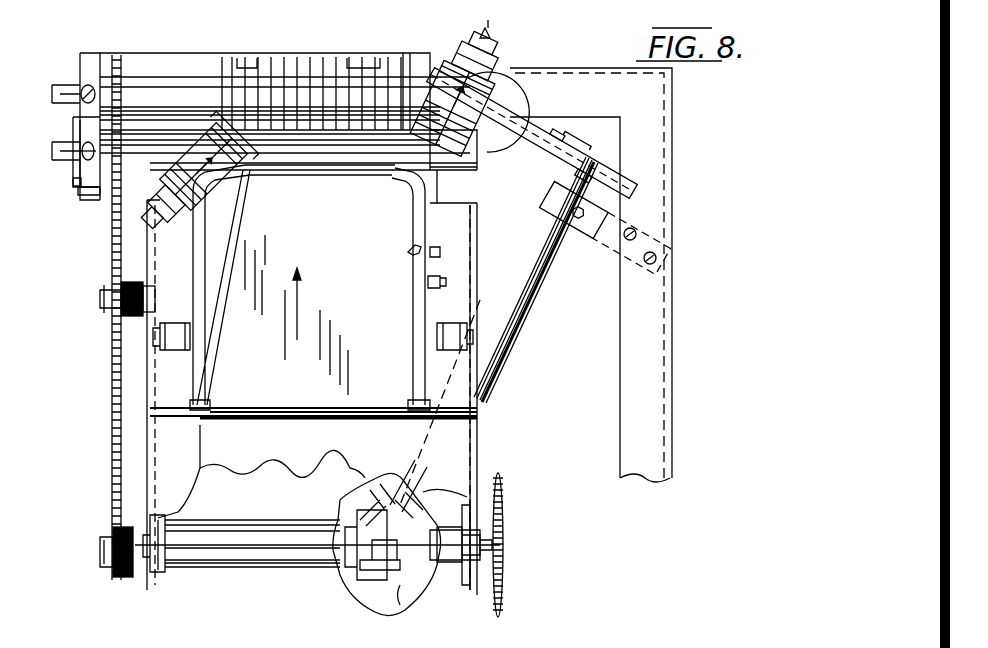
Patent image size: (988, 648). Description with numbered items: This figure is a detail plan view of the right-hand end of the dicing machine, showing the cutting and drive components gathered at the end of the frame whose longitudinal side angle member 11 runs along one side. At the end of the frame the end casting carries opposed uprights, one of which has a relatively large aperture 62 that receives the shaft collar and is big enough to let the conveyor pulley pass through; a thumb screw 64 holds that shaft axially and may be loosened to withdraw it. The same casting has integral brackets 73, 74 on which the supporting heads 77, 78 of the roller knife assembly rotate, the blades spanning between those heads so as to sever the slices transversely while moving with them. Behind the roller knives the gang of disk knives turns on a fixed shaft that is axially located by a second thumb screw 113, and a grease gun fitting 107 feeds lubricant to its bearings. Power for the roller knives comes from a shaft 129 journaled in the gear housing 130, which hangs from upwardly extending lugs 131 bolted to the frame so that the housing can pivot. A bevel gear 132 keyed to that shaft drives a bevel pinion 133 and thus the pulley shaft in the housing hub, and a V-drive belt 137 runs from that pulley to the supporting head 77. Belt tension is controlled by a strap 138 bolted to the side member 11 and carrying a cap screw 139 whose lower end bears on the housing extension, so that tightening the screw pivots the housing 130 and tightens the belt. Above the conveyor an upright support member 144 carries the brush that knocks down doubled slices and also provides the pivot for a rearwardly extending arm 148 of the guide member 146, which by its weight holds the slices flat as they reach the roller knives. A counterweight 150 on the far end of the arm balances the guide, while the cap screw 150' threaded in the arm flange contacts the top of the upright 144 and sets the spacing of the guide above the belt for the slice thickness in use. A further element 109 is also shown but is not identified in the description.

The side angle member 11 is at (653, 365).
The aperture 62 is at (77, 190).
The thumb screw 64 is at (80, 160).
The bracket 73 is at (517, 73).
The bracket 74 is at (143, 237).
The supporting head 77 is at (447, 63).
The supporting head 78 is at (160, 133).
The grease gun fitting 107 is at (433, 253).
The roller 109 is at (443, 280).
The thumb screw 113 is at (80, 85).
The shaft 129 is at (422, 590).
The gear housing 130 is at (330, 567).
The upwardly extending lug 131 is at (165, 565).
The bevel gear 132 is at (340, 513).
The bevel pinion 133 is at (345, 478).
The V-drive belt 137 is at (533, 133).
The strap 138 is at (600, 233).
The cap screw 139 is at (553, 197).
The upright support member 144 is at (420, 325).
The guide member 146 is at (370, 190).
The rearwardly extending arm 148 is at (210, 235).
The counterweight 150 is at (313, 356).
The cap screw 150' is at (379, 265).